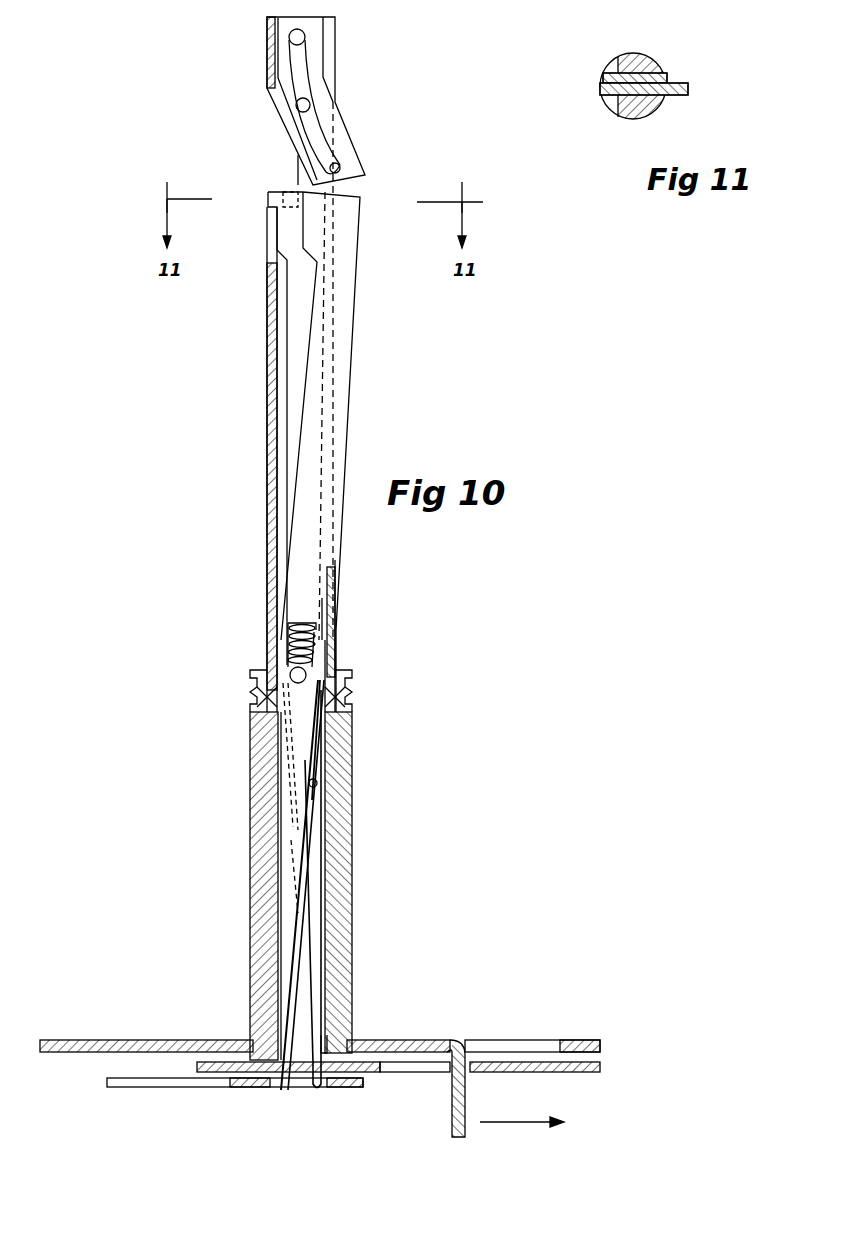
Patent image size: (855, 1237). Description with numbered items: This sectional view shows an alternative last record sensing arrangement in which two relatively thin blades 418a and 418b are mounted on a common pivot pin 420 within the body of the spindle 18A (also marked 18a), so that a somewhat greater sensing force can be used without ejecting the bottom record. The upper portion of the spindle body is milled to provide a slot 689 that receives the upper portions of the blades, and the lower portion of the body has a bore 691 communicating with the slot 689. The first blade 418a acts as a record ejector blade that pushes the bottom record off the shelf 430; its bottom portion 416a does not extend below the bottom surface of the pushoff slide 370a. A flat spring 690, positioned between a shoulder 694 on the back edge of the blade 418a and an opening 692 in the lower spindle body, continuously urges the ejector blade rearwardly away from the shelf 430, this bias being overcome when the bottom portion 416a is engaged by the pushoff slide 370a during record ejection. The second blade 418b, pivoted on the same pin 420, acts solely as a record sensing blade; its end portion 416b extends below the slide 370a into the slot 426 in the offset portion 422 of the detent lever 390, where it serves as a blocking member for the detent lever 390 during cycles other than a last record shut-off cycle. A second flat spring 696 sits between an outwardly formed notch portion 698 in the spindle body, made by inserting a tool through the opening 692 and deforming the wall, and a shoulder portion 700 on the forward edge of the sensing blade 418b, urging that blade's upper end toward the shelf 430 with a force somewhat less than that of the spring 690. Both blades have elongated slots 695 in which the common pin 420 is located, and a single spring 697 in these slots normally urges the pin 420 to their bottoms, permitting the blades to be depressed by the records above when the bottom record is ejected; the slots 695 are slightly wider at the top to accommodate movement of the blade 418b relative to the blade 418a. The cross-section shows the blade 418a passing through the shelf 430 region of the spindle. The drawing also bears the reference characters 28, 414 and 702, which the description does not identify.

In FIG. 10, the spindle 18a is at (336, 53).
In FIG. 10, the spindle 18A is at (264, 500).
In FIG. 10, the shelf 430 is at (283, 192).
In FIG. 11, the shelf 430 is at (618, 110).
In FIG. 10, the record sensing blade 418b is at (292, 330).
In FIG. 11, the record sensing blade 418b is at (612, 60).
In FIG. 10, the record ejector blade 418a is at (345, 340).
In FIG. 11, the record ejector blade 418a is at (680, 95).
In FIG. 10, the slot 689 is at (333, 577).
In FIG. 10, the bore 691 is at (328, 600).
In FIG. 10, the elongated slots 695 is at (323, 613).
In FIG. 10, the spring 697 is at (288, 623).
In FIG. 10, the common pivot pin 420 is at (298, 675).
In FIG. 10, the notch portion 698 is at (256, 697).
In FIG. 10, the opening 692 is at (346, 700).
In FIG. 10, the second flat spring 696 is at (288, 752).
In FIG. 10, the flat spring 690 is at (352, 753).
In FIG. 10, the shoulder portion 700 is at (281, 787).
In FIG. 10, the shoulder 694 is at (317, 783).
In FIG. 10, the base plate 28 is at (107, 1040).
In FIG. 10, the block foot 414 is at (335, 1035).
In FIG. 10, the detent lever 390 is at (104, 1088).
In FIG. 10, the offset portion 422 is at (253, 1090).
In FIG. 10, the bottom portion 416a is at (287, 1092).
In FIG. 10, the slot 426 is at (321, 1090).
In FIG. 10, the end portion 416b is at (314, 1092).
In FIG. 10, the pushoff slide 370a is at (513, 1072).
In FIG. 10, the direction of movement 702 is at (522, 1131).